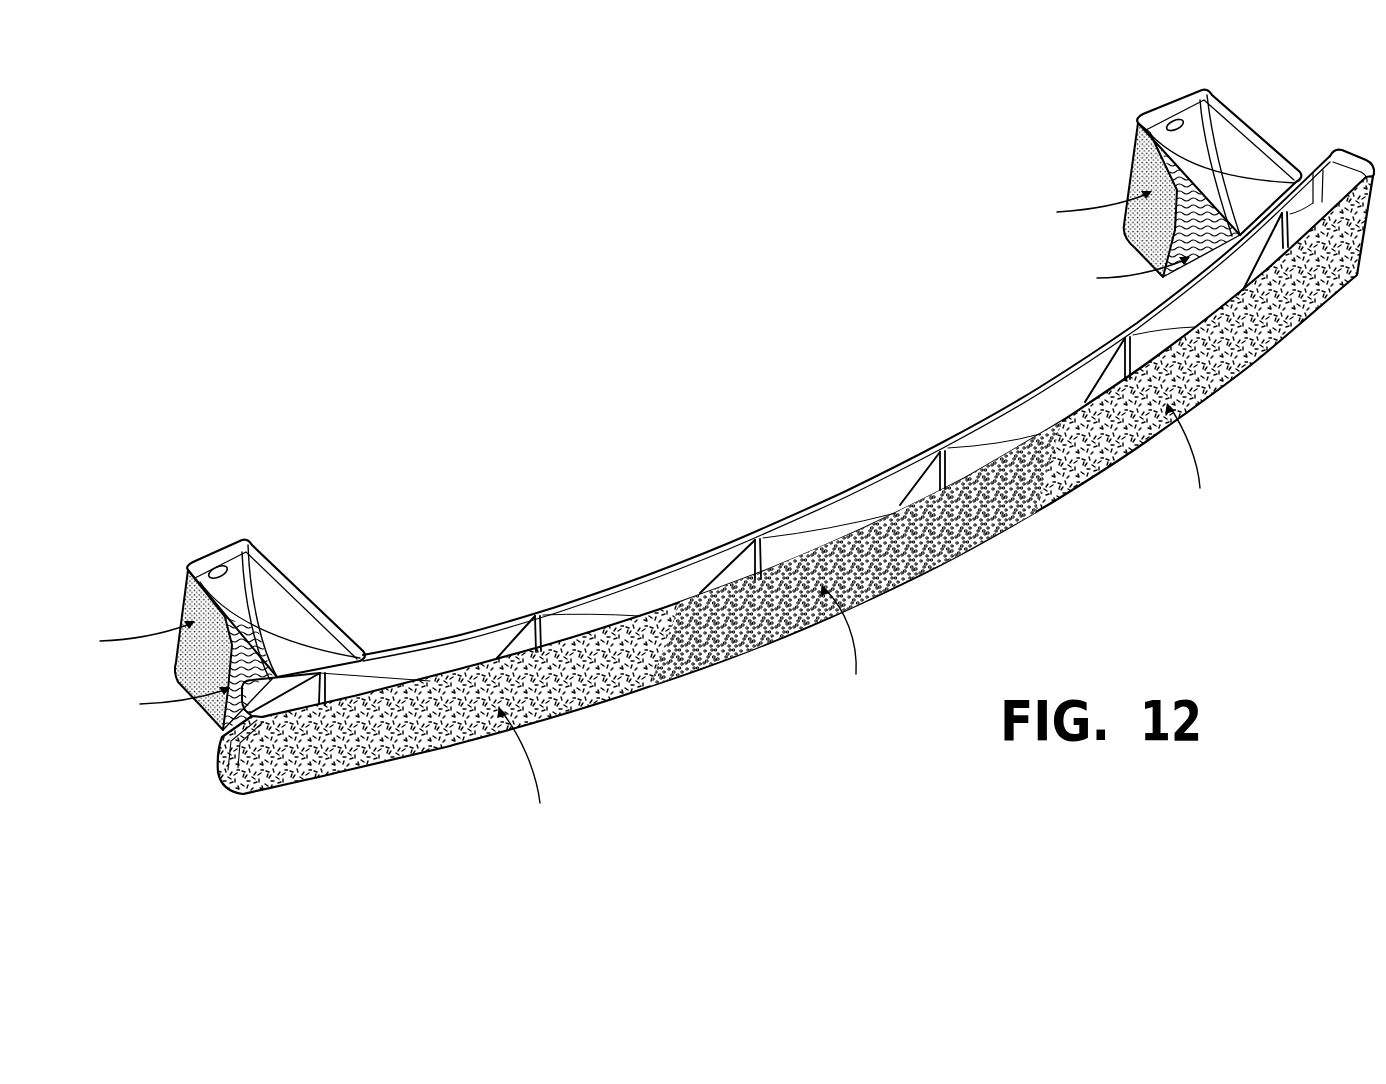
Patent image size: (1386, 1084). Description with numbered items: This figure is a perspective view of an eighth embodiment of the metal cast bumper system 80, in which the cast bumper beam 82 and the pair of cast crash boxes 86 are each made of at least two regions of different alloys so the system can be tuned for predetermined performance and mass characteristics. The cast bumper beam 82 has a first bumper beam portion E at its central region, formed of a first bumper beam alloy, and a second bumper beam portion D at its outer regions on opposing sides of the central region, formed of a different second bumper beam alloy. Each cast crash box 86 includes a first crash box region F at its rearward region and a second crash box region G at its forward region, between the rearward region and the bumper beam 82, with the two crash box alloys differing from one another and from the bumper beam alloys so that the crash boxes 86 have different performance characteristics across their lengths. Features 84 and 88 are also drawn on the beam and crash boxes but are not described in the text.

The bumper system 80 is at (240, 464).
The cast bumper beam 82 is at (1223, 392).
The gusset 84 is at (383, 677).
The cast crash box 86 is at (323, 608).
The mounting hole 88 is at (252, 628).